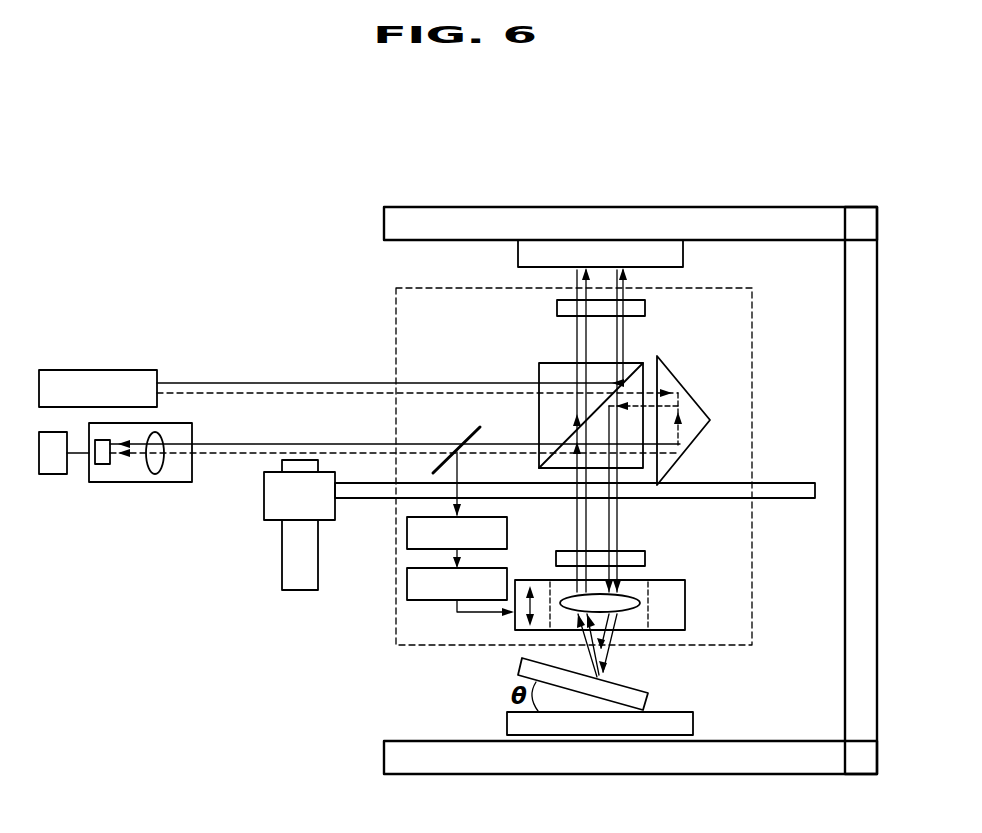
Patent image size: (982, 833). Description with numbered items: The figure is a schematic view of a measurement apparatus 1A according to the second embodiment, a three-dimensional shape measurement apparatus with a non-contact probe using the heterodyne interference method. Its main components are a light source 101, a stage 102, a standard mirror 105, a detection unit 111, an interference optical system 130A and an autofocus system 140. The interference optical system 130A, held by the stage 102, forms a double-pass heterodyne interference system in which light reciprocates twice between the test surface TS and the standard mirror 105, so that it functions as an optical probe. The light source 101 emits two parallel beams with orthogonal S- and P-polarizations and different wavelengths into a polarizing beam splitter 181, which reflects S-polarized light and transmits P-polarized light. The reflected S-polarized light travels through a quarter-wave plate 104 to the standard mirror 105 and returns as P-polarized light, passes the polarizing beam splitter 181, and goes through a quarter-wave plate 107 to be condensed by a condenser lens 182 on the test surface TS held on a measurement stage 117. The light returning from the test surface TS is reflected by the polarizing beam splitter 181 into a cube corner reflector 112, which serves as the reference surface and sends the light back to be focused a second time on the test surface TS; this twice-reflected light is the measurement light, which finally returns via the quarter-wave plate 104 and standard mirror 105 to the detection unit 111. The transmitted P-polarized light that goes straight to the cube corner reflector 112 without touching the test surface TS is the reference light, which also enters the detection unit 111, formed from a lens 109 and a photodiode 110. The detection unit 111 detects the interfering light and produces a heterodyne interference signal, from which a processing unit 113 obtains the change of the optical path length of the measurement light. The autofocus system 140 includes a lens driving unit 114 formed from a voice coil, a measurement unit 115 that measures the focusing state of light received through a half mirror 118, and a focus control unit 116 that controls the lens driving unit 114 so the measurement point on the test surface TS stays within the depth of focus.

The measurement apparatus 1A is at (473, 148).
The light source 101 is at (68, 370).
The stage 102 is at (720, 484).
The λ/4 plate 104 is at (557, 308).
The standard mirror 105 is at (517, 262).
The λ/4 plate 107 is at (645, 558).
The lens 109 is at (156, 475).
The photodiode 110 is at (103, 465).
The detection unit 111 is at (192, 432).
The cube corner reflector 112 is at (722, 397).
The processing unit 113 is at (52, 475).
The lens driving unit 114 is at (543, 602).
The measurement unit 115 is at (415, 537).
The focus control unit 116 is at (415, 590).
The measurement stage 117 is at (693, 722).
The half mirror 118 is at (466, 437).
The interference optical system 130A is at (753, 300).
The autofocus system 140 is at (426, 619).
The polarizing beam splitter 181 is at (597, 373).
The condenser lens 182 is at (643, 599).
The test surface TS is at (628, 694).